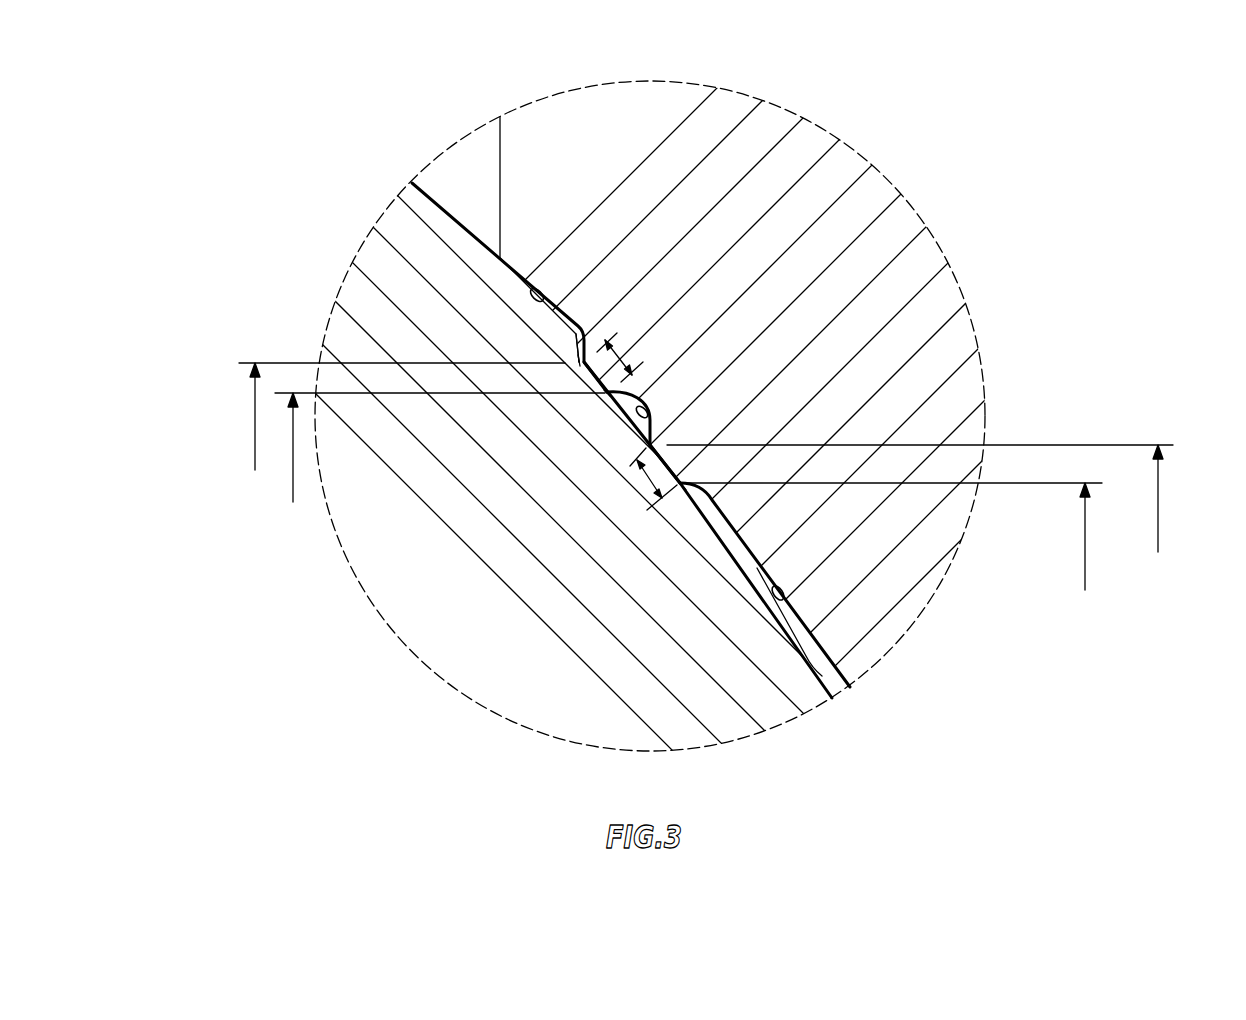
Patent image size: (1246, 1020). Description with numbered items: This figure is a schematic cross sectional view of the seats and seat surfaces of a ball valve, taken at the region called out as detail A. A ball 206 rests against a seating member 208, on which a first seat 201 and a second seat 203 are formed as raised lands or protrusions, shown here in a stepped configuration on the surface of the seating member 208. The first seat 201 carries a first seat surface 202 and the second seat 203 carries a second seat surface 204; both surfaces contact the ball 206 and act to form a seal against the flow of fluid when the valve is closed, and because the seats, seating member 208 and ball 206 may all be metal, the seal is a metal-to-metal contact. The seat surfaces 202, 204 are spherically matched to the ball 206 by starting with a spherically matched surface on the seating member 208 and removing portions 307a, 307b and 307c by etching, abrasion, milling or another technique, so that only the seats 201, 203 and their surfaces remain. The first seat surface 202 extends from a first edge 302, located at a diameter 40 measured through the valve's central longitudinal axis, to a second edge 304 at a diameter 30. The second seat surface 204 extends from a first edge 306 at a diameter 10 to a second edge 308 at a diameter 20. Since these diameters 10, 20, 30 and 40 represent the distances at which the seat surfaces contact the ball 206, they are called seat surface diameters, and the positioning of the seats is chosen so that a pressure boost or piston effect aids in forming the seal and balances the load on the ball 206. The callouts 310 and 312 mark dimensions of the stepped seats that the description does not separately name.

The detail A is at (780, 107).
The diameter 10 is at (255, 427).
The diameter 20 is at (293, 485).
The diameter 30 is at (1158, 525).
The diameter 40 is at (1085, 572).
The first seat 201 is at (665, 440).
The first seat surface 202 is at (663, 464).
The second seat 203 is at (590, 366).
The second seat surface 204 is at (578, 375).
The ball 206 is at (455, 673).
The seating member 208 is at (890, 230).
The first edge 302 is at (683, 490).
The second edge 304 is at (640, 447).
The first edge 306 is at (575, 367).
The removed portion 307a is at (545, 290).
The removed portion 307b is at (667, 428).
The removed portion 307c is at (787, 600).
The second edge 308 is at (600, 400).
The step width 310 is at (650, 470).
The step width 312 is at (622, 352).